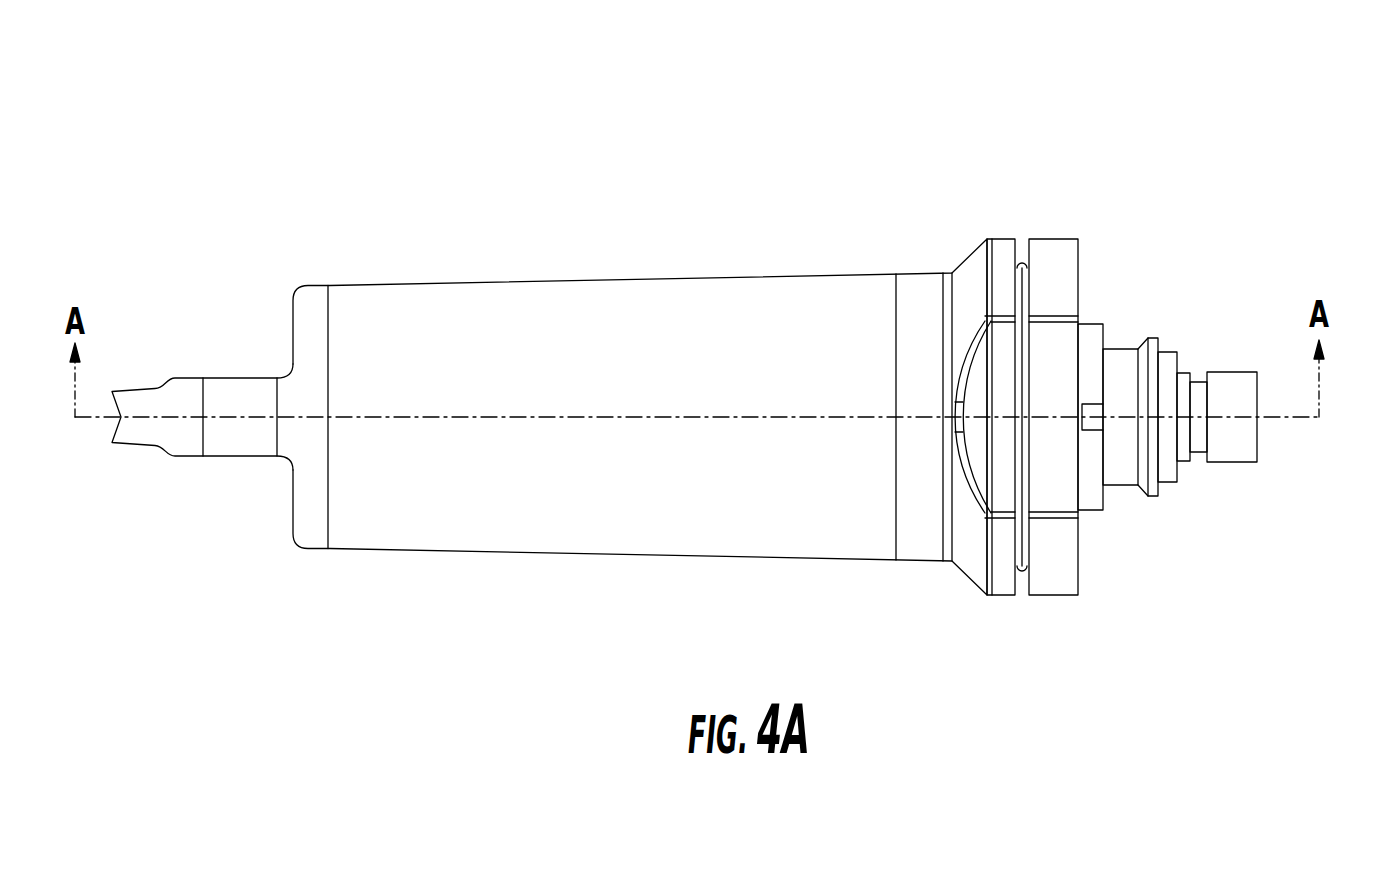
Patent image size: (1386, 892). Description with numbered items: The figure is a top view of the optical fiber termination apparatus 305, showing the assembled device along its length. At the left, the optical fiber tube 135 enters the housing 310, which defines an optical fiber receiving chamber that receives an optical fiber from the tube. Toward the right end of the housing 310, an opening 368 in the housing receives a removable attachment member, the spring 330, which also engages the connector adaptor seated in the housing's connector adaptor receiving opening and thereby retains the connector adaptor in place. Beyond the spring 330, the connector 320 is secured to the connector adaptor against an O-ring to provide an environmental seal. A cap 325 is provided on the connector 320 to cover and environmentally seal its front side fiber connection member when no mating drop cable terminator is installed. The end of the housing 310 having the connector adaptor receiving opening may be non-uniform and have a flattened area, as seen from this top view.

The optical fiber termination apparatus 305 is at (1153, 85).
The optical fiber tube 135 is at (161, 410).
The housing 310 is at (578, 280).
The opening 368 is at (1022, 254).
The spring 330 is at (1027, 278).
The connector 320 is at (1160, 342).
The cap 325 is at (1258, 445).